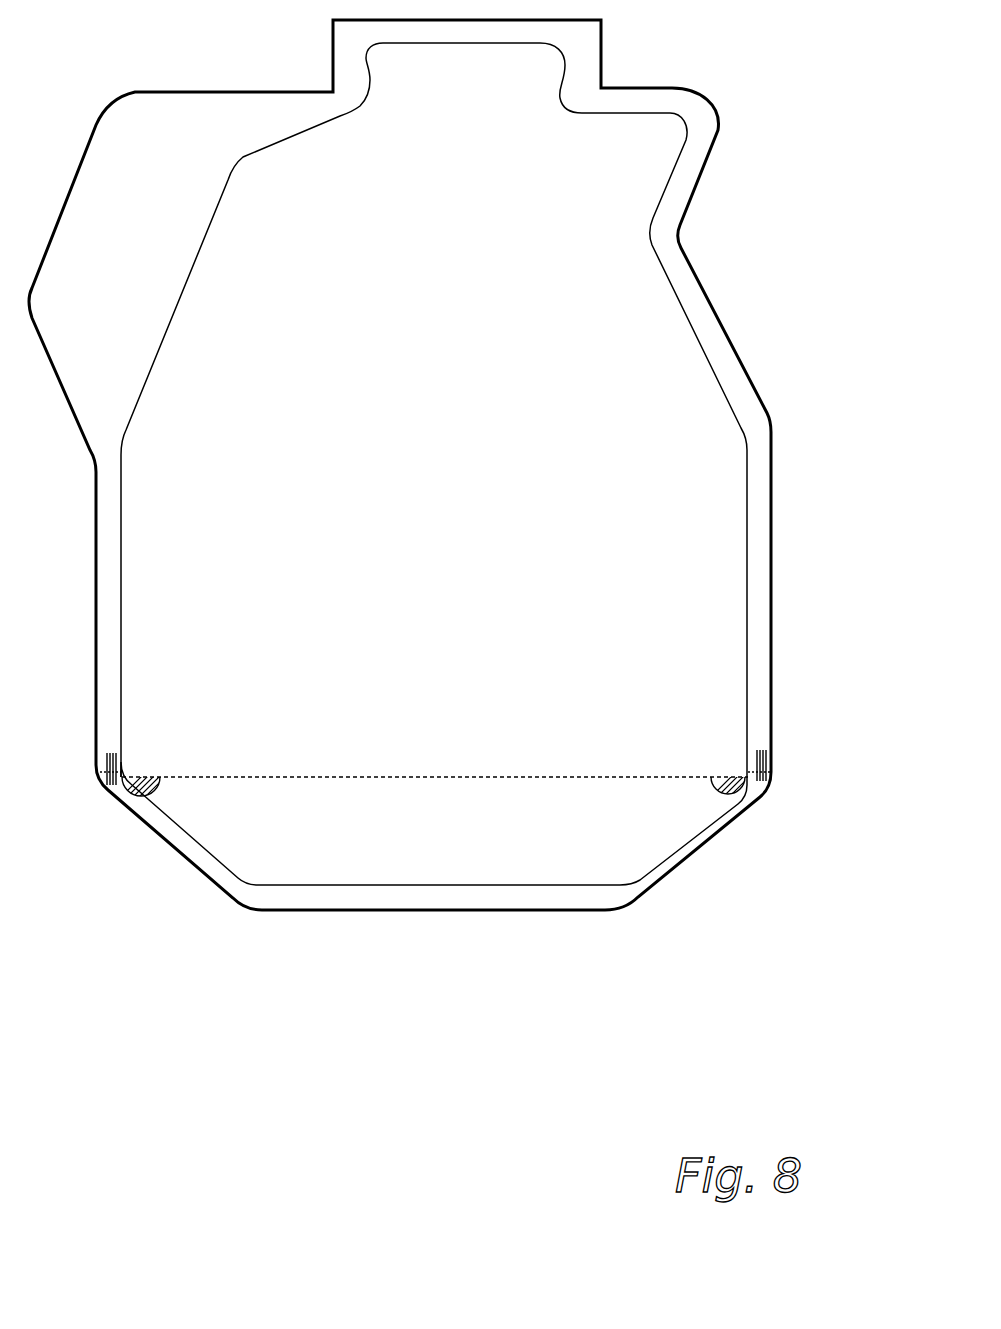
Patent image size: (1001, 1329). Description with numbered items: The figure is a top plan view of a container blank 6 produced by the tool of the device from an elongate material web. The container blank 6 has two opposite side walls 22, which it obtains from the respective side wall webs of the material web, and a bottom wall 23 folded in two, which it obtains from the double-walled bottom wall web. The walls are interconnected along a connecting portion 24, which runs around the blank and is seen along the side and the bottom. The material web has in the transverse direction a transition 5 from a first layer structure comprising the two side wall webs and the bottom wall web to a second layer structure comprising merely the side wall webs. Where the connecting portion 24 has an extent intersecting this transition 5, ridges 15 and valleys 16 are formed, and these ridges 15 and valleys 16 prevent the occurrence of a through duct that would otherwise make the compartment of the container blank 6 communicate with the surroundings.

The transition 5 is at (772, 775).
The container blank 6 is at (446, 549).
The ridges 15 is at (764, 753).
The valleys 16 is at (111, 769).
The side walls 22 is at (677, 397).
The bottom wall 23 is at (670, 825).
The connecting portion 24 is at (758, 580).